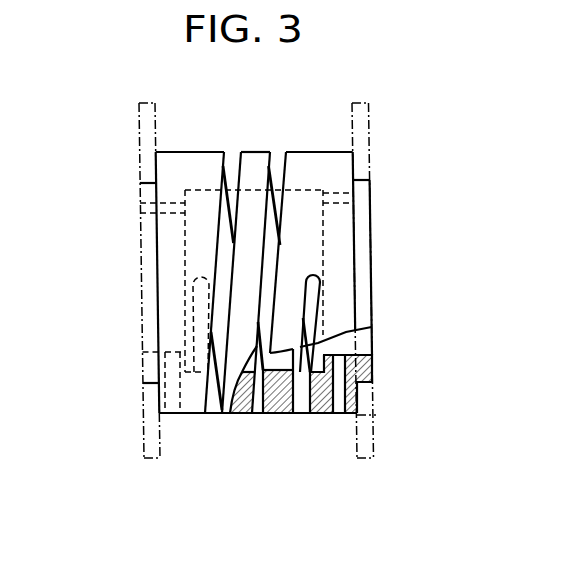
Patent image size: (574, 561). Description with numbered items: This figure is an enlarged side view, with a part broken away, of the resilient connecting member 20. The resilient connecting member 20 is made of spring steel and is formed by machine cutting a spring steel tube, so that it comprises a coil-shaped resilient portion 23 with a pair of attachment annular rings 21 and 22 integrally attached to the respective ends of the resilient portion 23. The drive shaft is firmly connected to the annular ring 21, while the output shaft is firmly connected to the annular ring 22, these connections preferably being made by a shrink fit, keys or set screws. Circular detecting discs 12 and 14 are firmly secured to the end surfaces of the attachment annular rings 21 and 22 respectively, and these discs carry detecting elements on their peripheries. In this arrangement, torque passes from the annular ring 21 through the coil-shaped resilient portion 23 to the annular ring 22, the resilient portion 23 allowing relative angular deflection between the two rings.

The circular detecting disc 12 is at (376, 415).
The circular detecting disc 14 is at (145, 423).
The resilient connecting member 20 is at (266, 495).
The attachment annular ring 21 is at (347, 243).
The attachment annular ring 22 is at (165, 263).
The coil-shaped resilient portion 23 is at (257, 160).